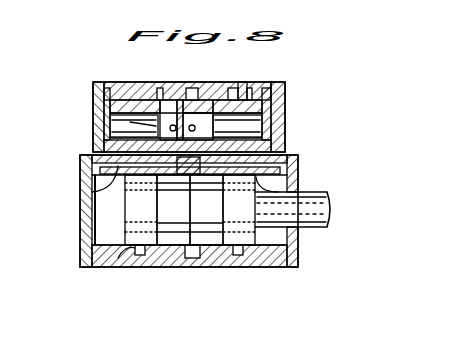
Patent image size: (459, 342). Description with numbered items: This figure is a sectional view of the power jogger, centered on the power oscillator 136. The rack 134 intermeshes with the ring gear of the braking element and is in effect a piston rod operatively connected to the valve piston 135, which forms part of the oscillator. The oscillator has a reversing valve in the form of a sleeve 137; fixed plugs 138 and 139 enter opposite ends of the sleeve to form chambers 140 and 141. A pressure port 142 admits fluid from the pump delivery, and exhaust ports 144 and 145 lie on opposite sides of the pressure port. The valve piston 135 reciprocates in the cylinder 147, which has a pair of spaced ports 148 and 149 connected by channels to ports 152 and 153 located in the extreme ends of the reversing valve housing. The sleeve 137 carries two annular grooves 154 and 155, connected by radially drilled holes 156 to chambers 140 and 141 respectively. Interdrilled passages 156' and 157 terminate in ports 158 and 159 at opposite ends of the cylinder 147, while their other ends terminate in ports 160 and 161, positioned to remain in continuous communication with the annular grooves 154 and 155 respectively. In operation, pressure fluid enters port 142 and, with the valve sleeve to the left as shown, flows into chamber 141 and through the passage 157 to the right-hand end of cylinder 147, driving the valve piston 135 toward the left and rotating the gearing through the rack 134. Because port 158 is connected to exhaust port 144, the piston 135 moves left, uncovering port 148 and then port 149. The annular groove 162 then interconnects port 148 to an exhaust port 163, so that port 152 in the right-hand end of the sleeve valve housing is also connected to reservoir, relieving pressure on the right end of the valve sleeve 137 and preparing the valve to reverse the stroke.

The rack 134 is at (320, 228).
The valve piston 135 is at (196, 262).
The power oscillator 136 is at (285, 262).
The sleeve 137 is at (242, 86).
The fixed plug 138 is at (118, 127).
The fixed plug 139 is at (258, 127).
The chamber 140 is at (148, 88).
The chamber 141 is at (206, 88).
The pressure port 142 is at (190, 87).
The exhaust port 144 is at (176, 88).
The exhaust port 145 is at (236, 87).
The cylinder 147 is at (100, 224).
The port 148 is at (124, 262).
The port 149 is at (258, 262).
The port 152 is at (272, 82).
The port 153 is at (113, 82).
The annular groove 154 is at (108, 149).
The annular groove 155 is at (264, 152).
The radially drilled hole 156 is at (82, 114).
The interdrilled passage 156' is at (74, 187).
The interdrilled passage 157 is at (286, 190).
The port 158 is at (93, 171).
The port 159 is at (299, 165).
The port 160 is at (175, 185).
The port 161 is at (207, 185).
The annular groove 162 is at (152, 262).
The exhaust port 163 is at (180, 262).